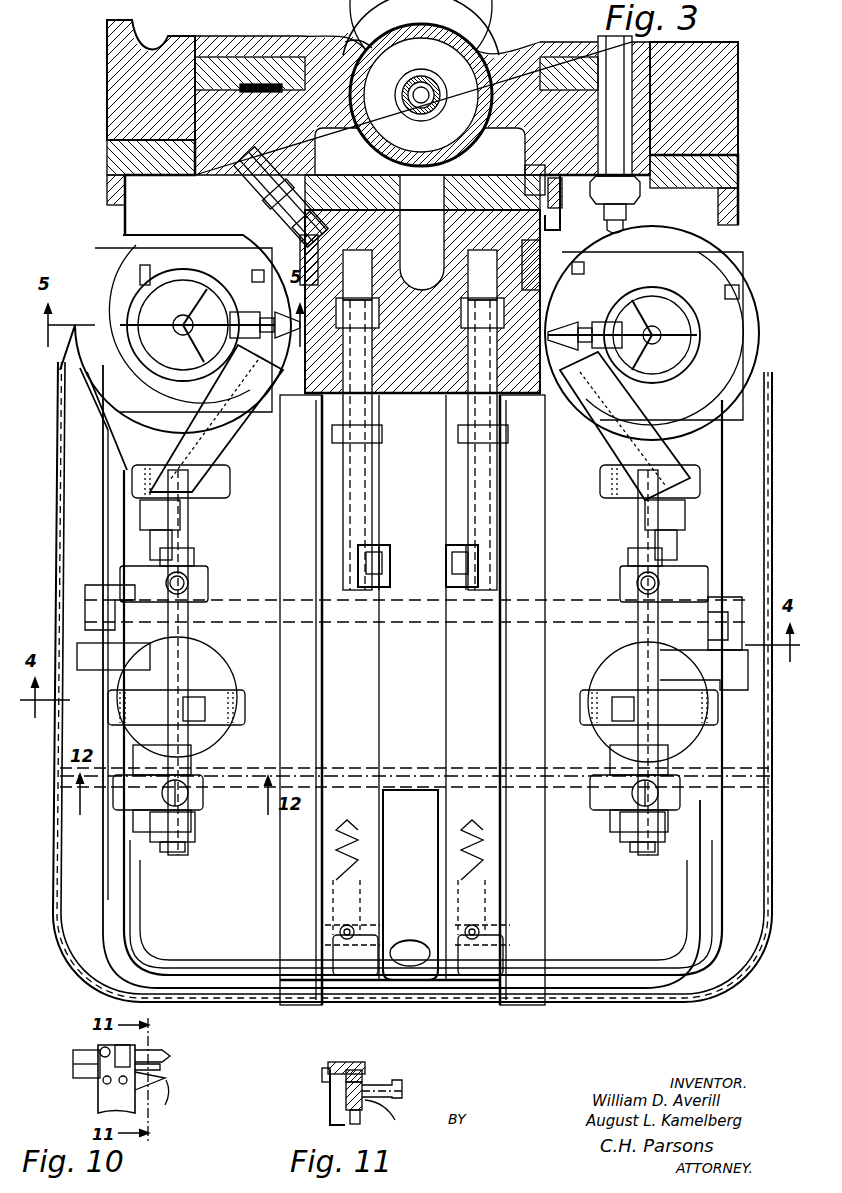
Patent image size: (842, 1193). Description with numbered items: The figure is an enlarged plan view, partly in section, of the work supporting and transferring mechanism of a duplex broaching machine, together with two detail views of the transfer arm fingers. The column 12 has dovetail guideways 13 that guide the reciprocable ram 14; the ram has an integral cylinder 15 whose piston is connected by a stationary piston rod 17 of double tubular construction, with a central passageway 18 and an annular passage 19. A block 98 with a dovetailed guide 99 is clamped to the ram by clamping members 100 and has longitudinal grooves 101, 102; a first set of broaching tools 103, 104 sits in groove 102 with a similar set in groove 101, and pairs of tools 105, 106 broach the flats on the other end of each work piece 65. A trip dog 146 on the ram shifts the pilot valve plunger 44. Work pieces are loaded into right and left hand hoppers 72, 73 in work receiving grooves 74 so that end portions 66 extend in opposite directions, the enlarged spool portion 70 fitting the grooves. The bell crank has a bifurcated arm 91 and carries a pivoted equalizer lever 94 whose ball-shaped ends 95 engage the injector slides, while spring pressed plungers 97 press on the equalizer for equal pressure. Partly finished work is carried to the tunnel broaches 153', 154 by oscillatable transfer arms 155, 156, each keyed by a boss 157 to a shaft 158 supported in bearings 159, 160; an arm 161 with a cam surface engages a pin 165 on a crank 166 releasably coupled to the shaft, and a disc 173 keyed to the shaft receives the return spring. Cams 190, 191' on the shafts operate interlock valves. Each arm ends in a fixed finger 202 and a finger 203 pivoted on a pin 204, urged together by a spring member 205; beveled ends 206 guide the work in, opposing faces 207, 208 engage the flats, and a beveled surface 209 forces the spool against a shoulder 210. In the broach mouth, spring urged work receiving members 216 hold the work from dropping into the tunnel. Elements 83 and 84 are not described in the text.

In FIG. 3, the column 12 is at (125, 24).
In FIG. 3, the dovetail guideways 13 is at (300, 105).
In FIG. 3, the reciprocable ram 14 is at (497, 62).
In FIG. 3, the cylinder 15 is at (360, 45).
In FIG. 3, the piston rod 17 is at (414, 75).
In FIG. 3, the central passageway 18 is at (430, 82).
In FIG. 3, the annular passage 19 is at (436, 95).
In FIG. 3, the pilot valve plunger 44 is at (625, 208).
In FIG. 3, the work piece 65 is at (334, 438).
In FIG. 10, the end portion of work piece 66 is at (164, 1066).
In FIG. 11, the end portion of work piece 66 is at (396, 1099).
In FIG. 11, the spool portion 70 is at (396, 1120).
In FIG. 3, the right hand hopper 72 is at (468, 590).
In FIG. 3, the left hand hopper 73 is at (372, 588).
In FIG. 3, the work receiving grooves 74 is at (366, 578).
In FIG. 3, the cross rod 83 is at (305, 600).
In FIG. 3, the frame 84 is at (364, 770).
In FIG. 3, the bifurcated arm 91 is at (418, 982).
In FIG. 3, the equalizer lever 94 is at (440, 985).
In FIG. 3, the ball-shaped ends 95 is at (350, 970).
In FIG. 3, the spring pressed plungers 97 is at (300, 893).
In FIG. 3, the block 98 is at (355, 250).
In FIG. 3, the dovetailed guide 99 is at (562, 229).
In FIG. 3, the clamping members 100 is at (258, 164).
In FIG. 3, the longitudinal groove 101 is at (342, 295).
In FIG. 3, the longitudinal groove 102 is at (480, 250).
In FIG. 3, the broaching tool 103 is at (408, 390).
In FIG. 3, the broaching tool 104 is at (416, 285).
In FIG. 3, the broaching tool 105 is at (292, 350).
In FIG. 3, the broaching tool 106 is at (318, 242).
In FIG. 3, the trip dog 146 is at (522, 180).
In FIG. 3, the tunnel broach 153' is at (670, 333).
In FIG. 3, the tunnel broach 154 is at (97, 260).
In FIG. 3, the transfer arm 155 is at (610, 452).
In FIG. 3, the transfer arm 156 is at (224, 433).
In FIG. 10, the transfer arm 156 is at (98, 1097).
In FIG. 11, the transfer arm 156 is at (332, 1118).
In FIG. 3, the boss 157 is at (231, 487).
In FIG. 3, the shaft 158 is at (190, 553).
In FIG. 3, the bearing 159 is at (160, 515).
In FIG. 3, the bearing 160 is at (150, 747).
In FIG. 3, the arm 161 is at (105, 610).
In FIG. 3, the pin 165 is at (138, 638).
In FIG. 3, the crank 166 is at (209, 598).
In FIG. 3, the disc 173 is at (113, 812).
In FIG. 3, the cam 190 is at (218, 697).
In FIG. 3, the cam 191' is at (649, 702).
In FIG. 10, the fixed finger 202 is at (166, 1086).
In FIG. 10, the pivoted finger 203 is at (160, 1055).
In FIG. 10, the pin 204 is at (73, 1057).
In FIG. 10, the spring member 205 is at (120, 1045).
In FIG. 11, the spring member 205 is at (338, 1062).
In FIG. 10, the beveled ends 206 is at (166, 1079).
In FIG. 11, the opposing face 207 is at (345, 1103).
In FIG. 11, the opposing face 208 is at (323, 1080).
In FIG. 11, the beveled surface 209 is at (362, 1075).
In FIG. 11, the shoulder 210 is at (358, 1112).
In FIG. 3, the work receiving members 216 is at (188, 305).